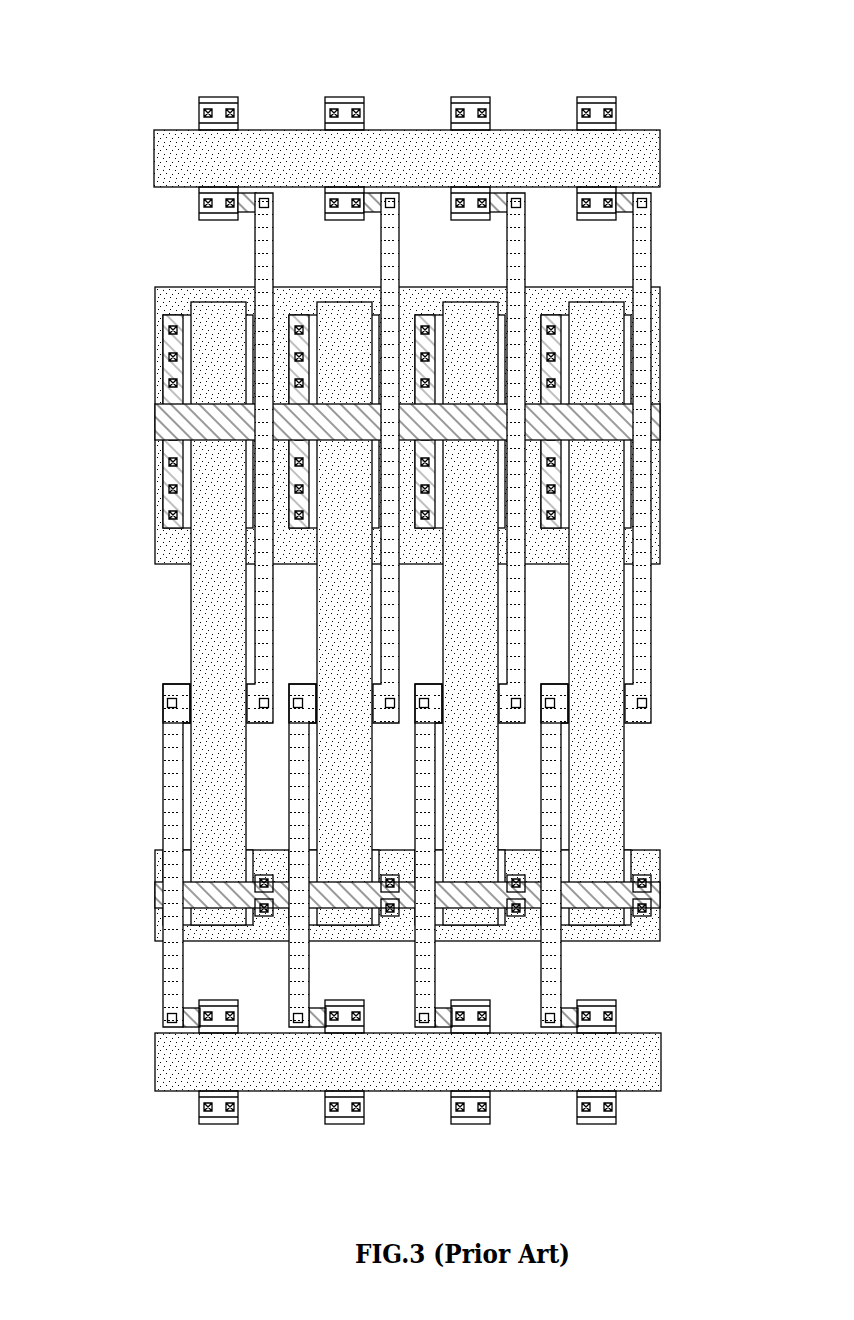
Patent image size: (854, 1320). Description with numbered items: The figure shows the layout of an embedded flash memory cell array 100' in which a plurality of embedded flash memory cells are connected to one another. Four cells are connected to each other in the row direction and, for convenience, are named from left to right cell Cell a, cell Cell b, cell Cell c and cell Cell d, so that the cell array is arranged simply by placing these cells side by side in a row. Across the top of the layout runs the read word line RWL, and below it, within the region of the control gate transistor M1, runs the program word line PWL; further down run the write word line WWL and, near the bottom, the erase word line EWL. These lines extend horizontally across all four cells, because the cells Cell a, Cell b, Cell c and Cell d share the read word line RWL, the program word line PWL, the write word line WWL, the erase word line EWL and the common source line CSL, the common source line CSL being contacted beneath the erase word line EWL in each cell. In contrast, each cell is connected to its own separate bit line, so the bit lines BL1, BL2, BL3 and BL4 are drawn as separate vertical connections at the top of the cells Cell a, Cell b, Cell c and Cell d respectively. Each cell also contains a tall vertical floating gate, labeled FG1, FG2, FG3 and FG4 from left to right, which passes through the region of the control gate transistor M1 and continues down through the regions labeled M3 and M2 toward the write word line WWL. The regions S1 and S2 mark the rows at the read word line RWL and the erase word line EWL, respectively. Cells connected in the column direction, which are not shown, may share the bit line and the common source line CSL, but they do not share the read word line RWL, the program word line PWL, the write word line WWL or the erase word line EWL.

The embedded flash memory cell array 100' is at (58, 12).
The bit line BL1 is at (218, 97).
The bit line BL2 is at (344, 97).
The bit line BL3 is at (470, 97).
The bit line BL4 is at (596, 97).
The read word line RWL is at (160, 160).
The program word line PWL is at (160, 421).
The write word line WWL is at (160, 896).
The erase word line EWL is at (160, 1055).
The first floating gate FG1 is at (192, 600).
The second floating gate FG2 is at (325, 652).
The third floating gate FG3 is at (492, 600).
The fourth floating gate FG4 is at (617, 647).
The common source line CSL is at (222, 1125).
The first select transistor region S1 is at (499, 186).
The second select transistor region S2 is at (481, 873).
The control gate transistor M1 is at (478, 425).
The second metal layer region M2 is at (478, 895).
The third metal layer region M3 is at (482, 703).
The cell a Cell a is at (194, 60).
The cell b Cell b is at (320, 60).
The cell c Cell c is at (446, 60).
The cell d Cell d is at (575, 60).